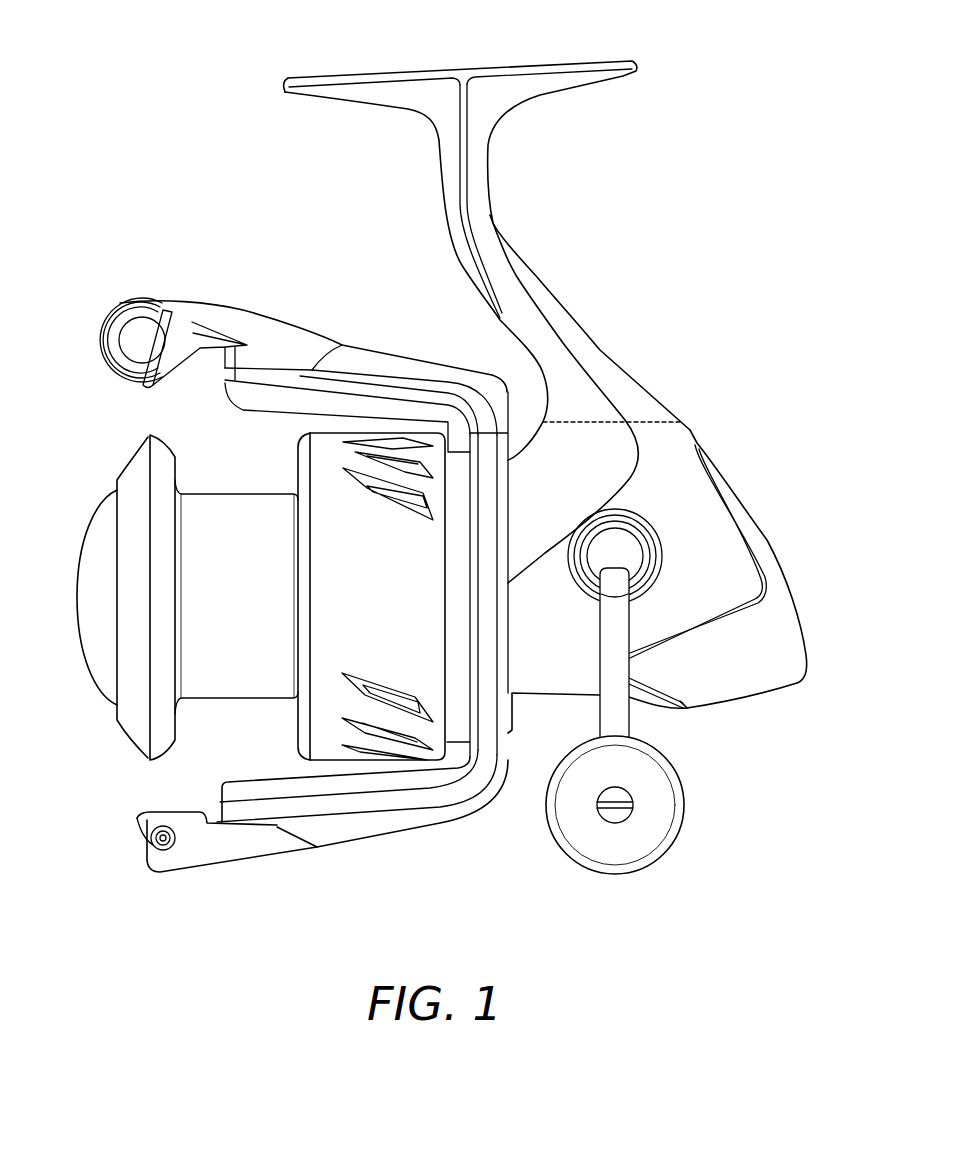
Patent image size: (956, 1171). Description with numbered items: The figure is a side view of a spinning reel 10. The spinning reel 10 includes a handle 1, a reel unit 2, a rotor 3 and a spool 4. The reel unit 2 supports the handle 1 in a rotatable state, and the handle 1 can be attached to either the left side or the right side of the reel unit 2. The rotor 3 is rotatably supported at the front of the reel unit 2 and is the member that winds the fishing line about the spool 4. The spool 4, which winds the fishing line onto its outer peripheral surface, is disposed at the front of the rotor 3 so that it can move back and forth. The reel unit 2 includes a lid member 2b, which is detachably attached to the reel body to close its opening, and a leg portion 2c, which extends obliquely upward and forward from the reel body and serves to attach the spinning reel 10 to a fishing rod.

The spinning reel 10 is at (683, 110).
The handle 1 is at (637, 732).
The reel unit 2 is at (605, 321).
The lid member 2b is at (603, 453).
The leg portion 2c is at (534, 280).
The rotor 3 is at (370, 354).
The spool 4 is at (228, 490).